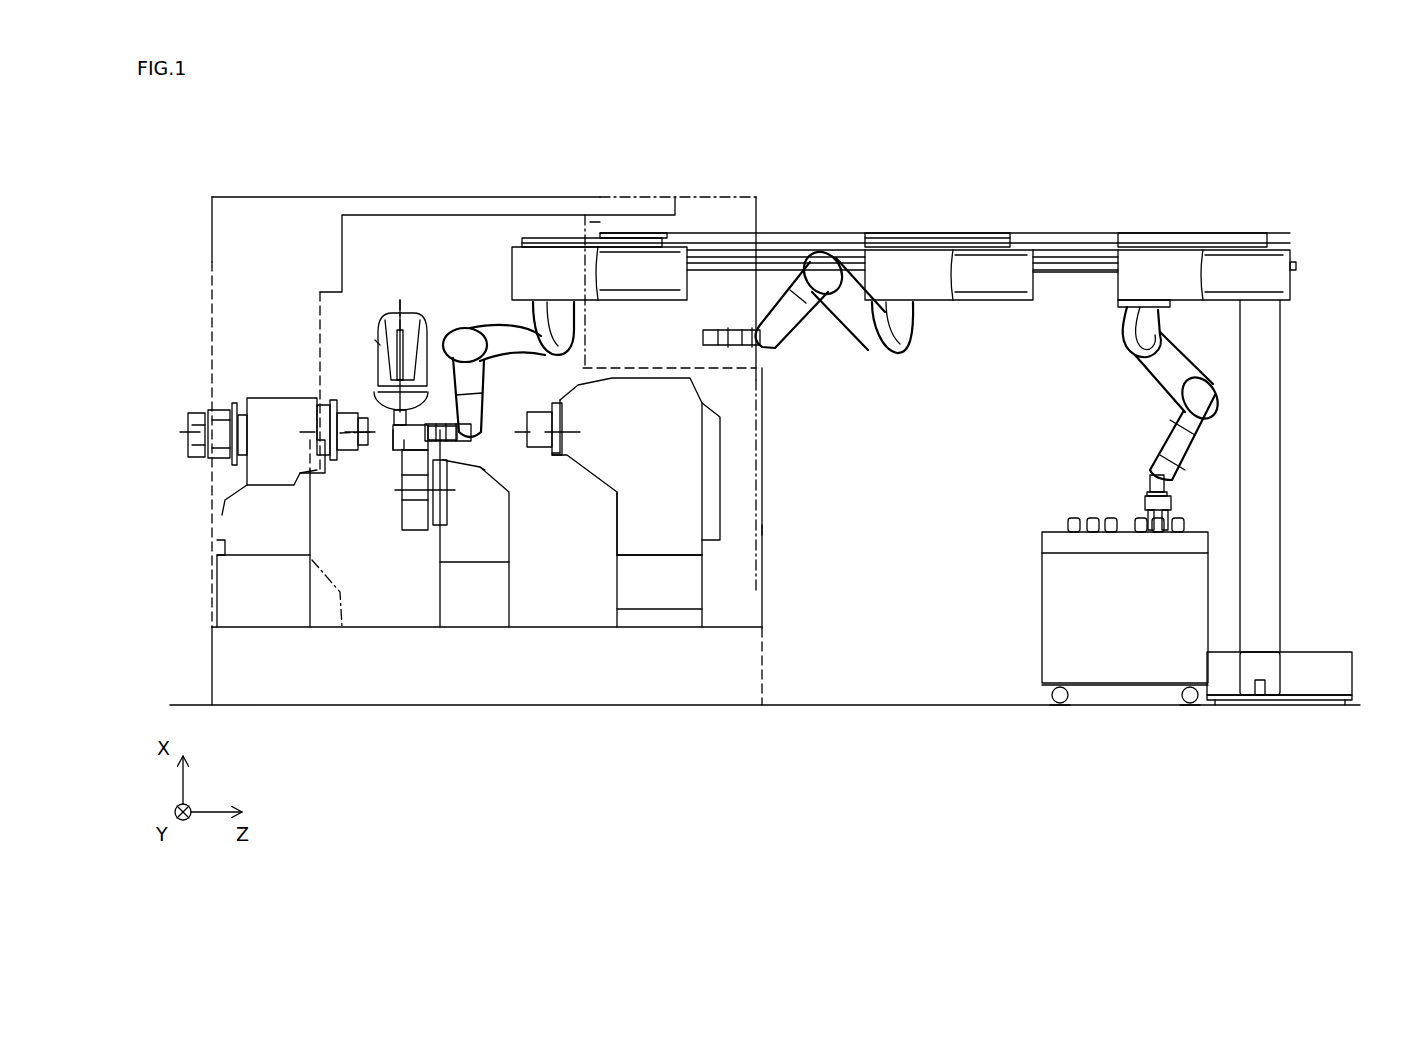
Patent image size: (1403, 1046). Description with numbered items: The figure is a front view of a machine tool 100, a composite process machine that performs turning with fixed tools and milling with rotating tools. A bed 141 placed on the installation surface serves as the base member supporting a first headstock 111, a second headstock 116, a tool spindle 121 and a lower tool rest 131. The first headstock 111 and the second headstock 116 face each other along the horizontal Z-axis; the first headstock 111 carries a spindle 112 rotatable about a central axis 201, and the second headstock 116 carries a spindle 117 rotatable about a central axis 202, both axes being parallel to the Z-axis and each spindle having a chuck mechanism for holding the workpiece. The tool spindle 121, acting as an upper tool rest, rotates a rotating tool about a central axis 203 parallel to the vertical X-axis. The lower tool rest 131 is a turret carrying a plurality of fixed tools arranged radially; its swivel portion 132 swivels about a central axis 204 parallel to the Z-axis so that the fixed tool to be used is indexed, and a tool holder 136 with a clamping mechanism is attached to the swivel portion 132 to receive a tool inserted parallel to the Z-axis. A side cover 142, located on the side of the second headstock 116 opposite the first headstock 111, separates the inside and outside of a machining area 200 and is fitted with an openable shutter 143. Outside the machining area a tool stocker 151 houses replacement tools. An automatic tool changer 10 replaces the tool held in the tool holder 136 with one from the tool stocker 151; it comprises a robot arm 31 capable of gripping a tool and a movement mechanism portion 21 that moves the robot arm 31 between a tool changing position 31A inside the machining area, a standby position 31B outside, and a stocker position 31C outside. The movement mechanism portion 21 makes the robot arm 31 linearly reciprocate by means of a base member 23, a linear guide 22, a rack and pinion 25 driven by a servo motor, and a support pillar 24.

The machine tool 100 is at (197, 168).
The automatic tool changer 10 is at (1249, 231).
The movement mechanism portion 21 is at (1012, 236).
The linear guide 22 is at (1070, 248).
The base member 23 is at (980, 240).
The support pillar 24 is at (1268, 358).
The rack and pinion 25 is at (1077, 273).
The robot arm 31 is at (857, 341).
The tool changing position 31A is at (501, 327).
The standby position 31B is at (853, 287).
The stocker position 31C is at (1184, 350).
The first headstock 111 is at (257, 394).
The spindle 112 is at (353, 417).
The second headstock 116 is at (597, 481).
The spindle 117 is at (545, 447).
The tool spindle 121 is at (376, 341).
The lower tool rest 131 is at (483, 467).
The swivel portion 132 is at (418, 522).
The tool holder 136 is at (393, 438).
The bed 141 is at (240, 668).
The side cover 142 is at (762, 530).
The shutter 143 is at (598, 222).
The tool stocker 151 is at (1198, 532).
The machining area 200 is at (413, 270).
The central axis 201 is at (340, 433).
The central axis 202 is at (573, 432).
The central axis 203 is at (383, 320).
The central axis 204 is at (404, 445).